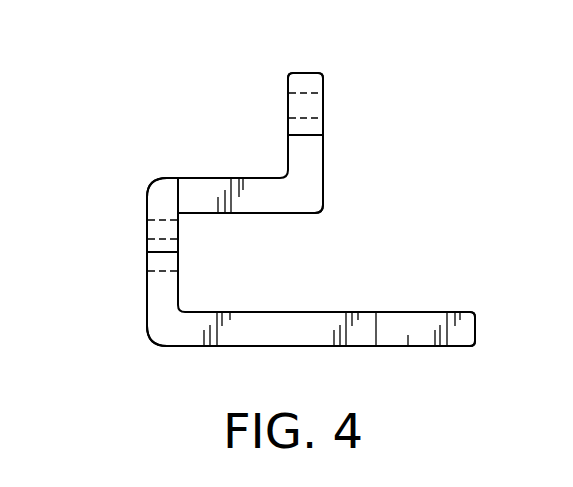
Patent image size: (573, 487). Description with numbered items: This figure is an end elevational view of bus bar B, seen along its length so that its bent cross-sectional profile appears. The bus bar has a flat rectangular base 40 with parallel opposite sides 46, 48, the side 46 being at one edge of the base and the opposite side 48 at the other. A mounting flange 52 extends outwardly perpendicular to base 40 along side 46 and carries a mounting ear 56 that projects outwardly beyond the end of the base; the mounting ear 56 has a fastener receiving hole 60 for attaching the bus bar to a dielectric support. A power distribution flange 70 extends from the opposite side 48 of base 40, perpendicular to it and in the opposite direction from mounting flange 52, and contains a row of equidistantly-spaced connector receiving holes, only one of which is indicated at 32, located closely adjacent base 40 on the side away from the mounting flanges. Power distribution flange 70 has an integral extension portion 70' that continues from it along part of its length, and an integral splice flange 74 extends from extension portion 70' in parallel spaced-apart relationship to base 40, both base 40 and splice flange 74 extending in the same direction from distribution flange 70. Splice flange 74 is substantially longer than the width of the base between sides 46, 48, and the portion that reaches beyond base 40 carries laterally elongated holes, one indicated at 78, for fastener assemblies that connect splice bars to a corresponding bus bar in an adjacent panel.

The connector receiving hole 32 is at (159, 236).
The base 40 is at (245, 185).
The side 46 is at (324, 195).
The opposite side 48 is at (147, 195).
The mounting flange 52 is at (302, 73).
The mounting ear 56 is at (324, 90).
The fastener receiving hole 60 is at (310, 118).
The power distribution flange 70 is at (125, 266).
The extension portion 70' is at (125, 299).
The splice flange 74 is at (346, 346).
The laterally elongated hole 78 is at (408, 323).
The bus bar B is at (161, 350).